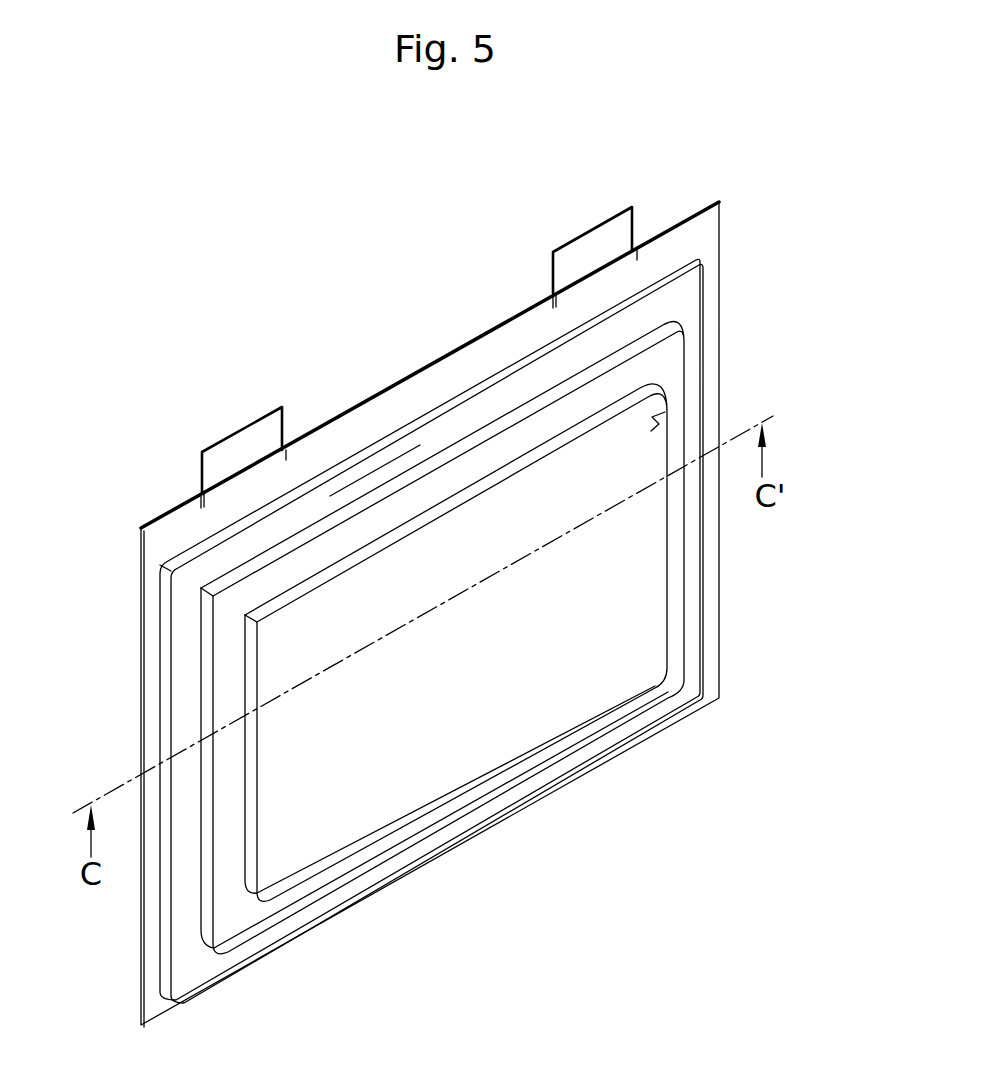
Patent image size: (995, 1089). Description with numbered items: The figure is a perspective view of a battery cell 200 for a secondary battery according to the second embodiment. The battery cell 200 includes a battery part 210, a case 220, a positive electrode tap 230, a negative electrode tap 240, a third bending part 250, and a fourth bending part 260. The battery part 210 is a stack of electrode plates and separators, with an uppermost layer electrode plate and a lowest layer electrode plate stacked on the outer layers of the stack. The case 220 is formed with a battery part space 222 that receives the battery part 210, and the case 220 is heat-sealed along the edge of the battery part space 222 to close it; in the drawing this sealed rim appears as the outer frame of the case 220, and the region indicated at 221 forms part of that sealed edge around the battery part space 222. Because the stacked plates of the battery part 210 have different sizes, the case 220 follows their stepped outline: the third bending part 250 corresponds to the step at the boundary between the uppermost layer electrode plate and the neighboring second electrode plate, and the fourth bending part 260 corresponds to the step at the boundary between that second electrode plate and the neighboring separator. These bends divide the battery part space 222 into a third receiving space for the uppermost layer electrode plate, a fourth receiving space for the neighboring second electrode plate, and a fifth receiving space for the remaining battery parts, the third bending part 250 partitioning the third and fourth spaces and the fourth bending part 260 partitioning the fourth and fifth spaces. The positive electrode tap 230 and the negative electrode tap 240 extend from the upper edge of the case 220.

The battery cell 200 is at (346, 258).
The battery part 210 is at (628, 588).
The case 220 is at (723, 190).
The outer sealing part 221 is at (713, 263).
The battery part space 222 is at (667, 411).
The positive electrode tap 230 is at (243, 446).
The negative electrode tap 240 is at (592, 246).
The third bending part 250 is at (486, 485).
The fourth bending part 260 is at (377, 485).